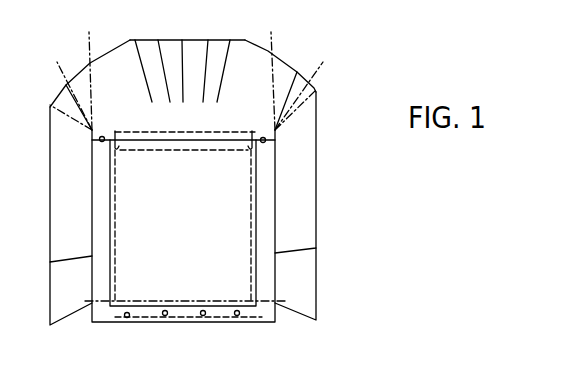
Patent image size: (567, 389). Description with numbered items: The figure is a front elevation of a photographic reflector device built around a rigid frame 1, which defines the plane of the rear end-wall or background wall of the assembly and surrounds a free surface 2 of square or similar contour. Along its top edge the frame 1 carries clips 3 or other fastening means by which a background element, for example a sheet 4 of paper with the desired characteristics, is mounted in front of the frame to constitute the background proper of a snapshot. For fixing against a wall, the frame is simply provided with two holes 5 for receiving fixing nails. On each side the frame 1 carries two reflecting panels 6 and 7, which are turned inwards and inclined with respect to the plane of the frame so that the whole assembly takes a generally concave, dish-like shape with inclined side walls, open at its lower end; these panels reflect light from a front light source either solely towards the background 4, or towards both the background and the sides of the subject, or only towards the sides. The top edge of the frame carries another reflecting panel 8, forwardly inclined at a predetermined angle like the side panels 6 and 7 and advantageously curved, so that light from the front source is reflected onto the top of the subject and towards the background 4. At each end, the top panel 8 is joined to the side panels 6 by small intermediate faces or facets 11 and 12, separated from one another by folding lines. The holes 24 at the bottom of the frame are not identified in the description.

The frame 1 is at (183, 314).
The free surface 2 is at (202, 300).
The clips 3 is at (118, 141).
The sheet of paper 4 is at (183, 225).
The holes 5 is at (100, 139).
The reflecting panel 6 is at (63, 219).
The reflecting panel 7 is at (63, 288).
The top reflecting panel 8 is at (195, 58).
The intermediate facet 11 is at (58, 72).
The intermediate facet 12 is at (180, 69).
The hole 24 is at (129, 316).